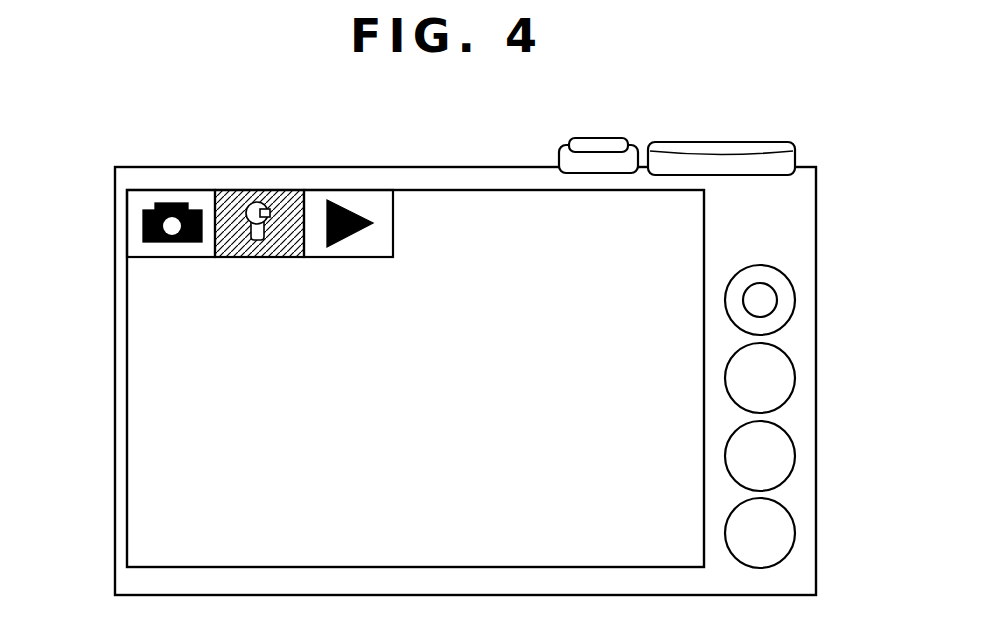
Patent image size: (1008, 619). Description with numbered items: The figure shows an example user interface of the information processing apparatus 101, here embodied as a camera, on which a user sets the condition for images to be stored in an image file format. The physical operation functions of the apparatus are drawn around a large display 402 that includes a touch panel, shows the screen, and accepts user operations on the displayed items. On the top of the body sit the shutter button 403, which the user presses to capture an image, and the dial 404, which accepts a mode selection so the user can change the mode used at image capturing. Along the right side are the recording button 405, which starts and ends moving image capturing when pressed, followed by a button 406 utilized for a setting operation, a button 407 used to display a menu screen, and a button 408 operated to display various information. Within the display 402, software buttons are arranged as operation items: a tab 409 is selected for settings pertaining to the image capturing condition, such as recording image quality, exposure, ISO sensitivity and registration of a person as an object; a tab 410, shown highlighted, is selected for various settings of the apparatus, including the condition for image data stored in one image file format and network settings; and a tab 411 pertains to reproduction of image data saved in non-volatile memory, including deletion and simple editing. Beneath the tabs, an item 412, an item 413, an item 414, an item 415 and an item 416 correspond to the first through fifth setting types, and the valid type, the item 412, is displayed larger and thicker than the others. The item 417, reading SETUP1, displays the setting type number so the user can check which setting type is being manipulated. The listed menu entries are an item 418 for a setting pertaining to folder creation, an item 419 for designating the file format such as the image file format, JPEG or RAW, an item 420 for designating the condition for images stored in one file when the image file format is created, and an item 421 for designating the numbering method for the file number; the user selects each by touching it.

The information processing apparatus 101 is at (818, 200).
The display 402 is at (438, 212).
The shutter button 403 is at (599, 145).
The dial 404 is at (717, 142).
The recording button 405 is at (795, 300).
The button 406 is at (795, 378).
The button 407 is at (795, 456).
The button 408 is at (795, 533).
The tab 409 is at (172, 189).
The tab 410 is at (261, 189).
The tab 411 is at (350, 189).
The item 412 is at (156, 279).
The item 413 is at (212, 292).
The item 414 is at (263, 293).
The item 415 is at (308, 293).
The item 416 is at (352, 290).
The item 417 is at (627, 262).
The item 418 is at (173, 367).
The item 419 is at (173, 422).
The item 420 is at (173, 477).
The item 421 is at (173, 532).